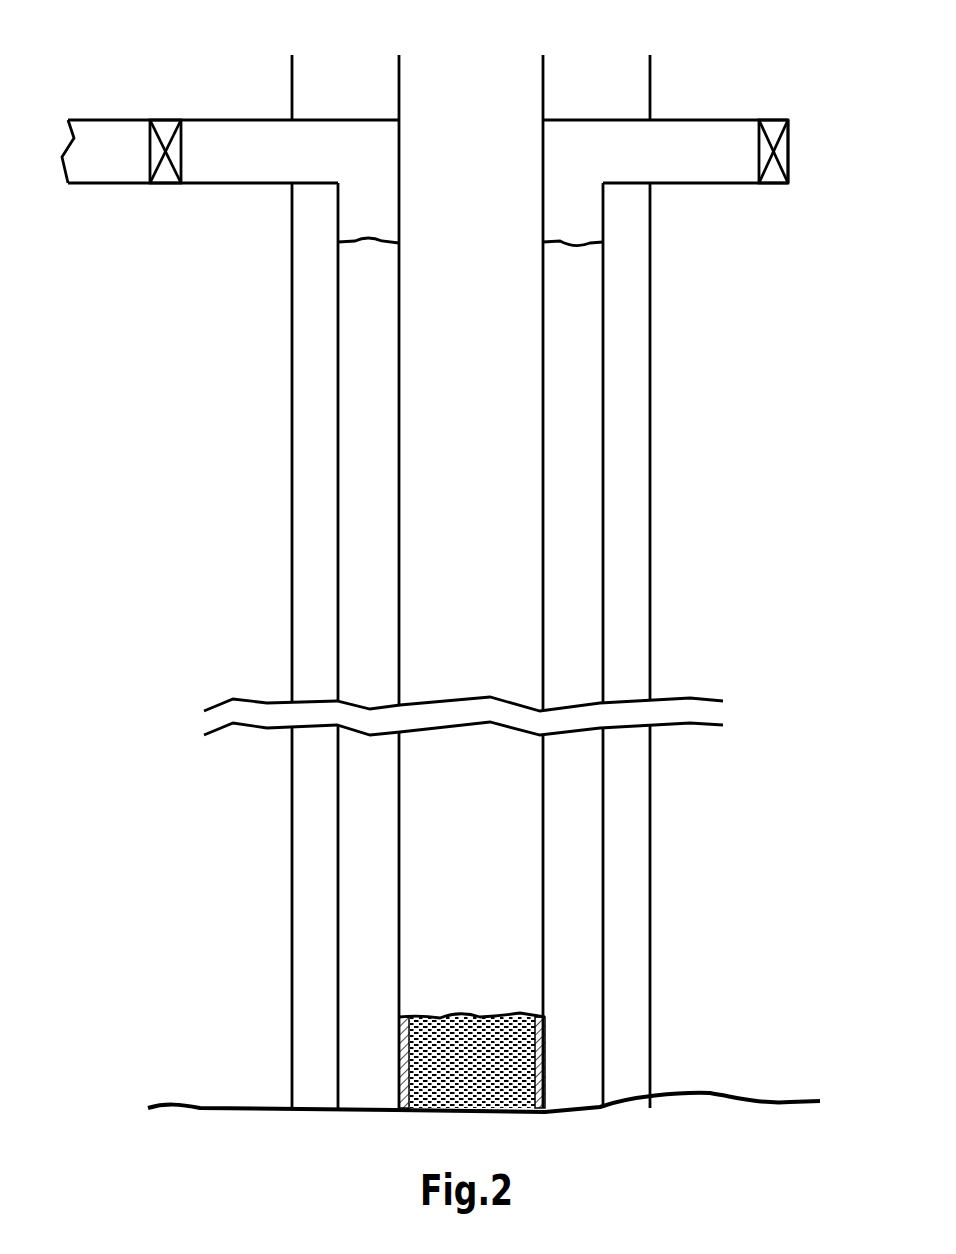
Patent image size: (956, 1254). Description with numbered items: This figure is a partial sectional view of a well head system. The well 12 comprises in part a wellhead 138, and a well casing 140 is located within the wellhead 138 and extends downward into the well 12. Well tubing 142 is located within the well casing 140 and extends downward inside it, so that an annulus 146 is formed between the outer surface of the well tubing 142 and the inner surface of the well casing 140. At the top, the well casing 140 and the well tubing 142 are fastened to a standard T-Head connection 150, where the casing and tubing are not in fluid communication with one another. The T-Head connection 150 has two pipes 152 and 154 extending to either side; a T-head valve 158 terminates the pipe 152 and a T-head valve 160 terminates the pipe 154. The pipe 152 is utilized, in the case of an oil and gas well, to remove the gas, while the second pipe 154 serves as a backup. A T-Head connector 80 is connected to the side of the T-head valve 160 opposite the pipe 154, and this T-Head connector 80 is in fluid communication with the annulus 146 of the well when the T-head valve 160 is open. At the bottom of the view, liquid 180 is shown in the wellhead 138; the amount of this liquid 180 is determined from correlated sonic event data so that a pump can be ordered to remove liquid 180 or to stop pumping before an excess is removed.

The well 12 is at (262, 1039).
The T-Head connector 80 is at (85, 183).
The wellhead 138 is at (478, 581).
The well casing 140 is at (603, 440).
The well tubing 142 is at (543, 360).
The annulus 146 is at (365, 958).
The T-Head connection 150 is at (470, 150).
The pipe 152 is at (713, 153).
The second pipe 154 is at (228, 150).
The T-head valve 158 is at (775, 168).
The T-head valve 160 is at (164, 173).
The liquid 180 is at (480, 1103).